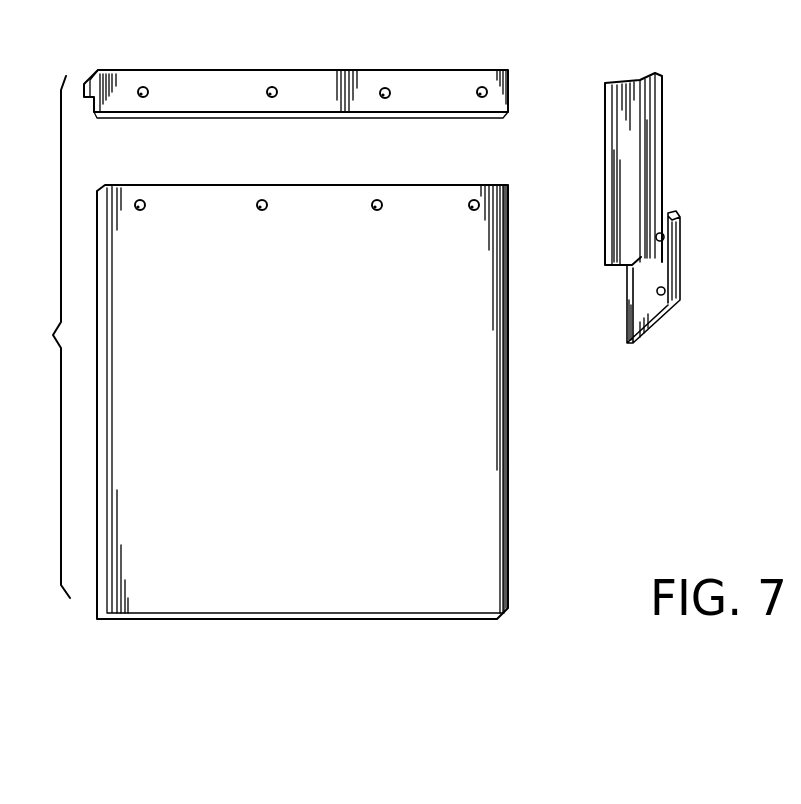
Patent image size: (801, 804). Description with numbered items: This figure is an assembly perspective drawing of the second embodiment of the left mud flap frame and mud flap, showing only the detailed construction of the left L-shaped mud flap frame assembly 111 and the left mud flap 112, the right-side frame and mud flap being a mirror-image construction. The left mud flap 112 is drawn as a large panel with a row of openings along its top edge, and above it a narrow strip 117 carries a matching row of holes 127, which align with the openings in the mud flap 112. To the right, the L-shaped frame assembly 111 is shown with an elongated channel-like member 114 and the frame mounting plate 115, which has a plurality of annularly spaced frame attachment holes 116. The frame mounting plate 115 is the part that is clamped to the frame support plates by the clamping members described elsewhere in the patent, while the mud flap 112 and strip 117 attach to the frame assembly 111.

The left L-shaped mud flap frame assembly 111 is at (650, 208).
The left mud flap 112 is at (278, 319).
The channel member 114 is at (607, 184).
The frame mounting plate 115 is at (673, 228).
The frame attachment holes 116 is at (658, 242).
The bar 117 is at (190, 110).
The holes 127 is at (145, 88).